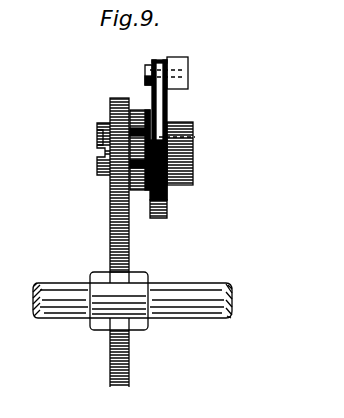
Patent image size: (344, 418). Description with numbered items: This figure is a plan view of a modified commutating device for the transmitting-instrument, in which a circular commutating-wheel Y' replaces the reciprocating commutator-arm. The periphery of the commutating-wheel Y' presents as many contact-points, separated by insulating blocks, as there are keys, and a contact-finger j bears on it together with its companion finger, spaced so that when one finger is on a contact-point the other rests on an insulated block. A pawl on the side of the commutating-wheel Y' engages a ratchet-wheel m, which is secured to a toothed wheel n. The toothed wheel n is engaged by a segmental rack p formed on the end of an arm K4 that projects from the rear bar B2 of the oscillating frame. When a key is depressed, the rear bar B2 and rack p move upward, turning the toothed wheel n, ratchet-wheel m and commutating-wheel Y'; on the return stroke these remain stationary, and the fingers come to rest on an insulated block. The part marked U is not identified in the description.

The contact-finger j is at (157, 102).
The clutch member U is at (112, 142).
The toothed wheel n is at (118, 156).
The ratchet-wheel m is at (112, 193).
The commutating-wheel Y' is at (180, 164).
The segmental rack p is at (128, 275).
The rear bar B2 is at (163, 291).
The arm K4 is at (128, 357).